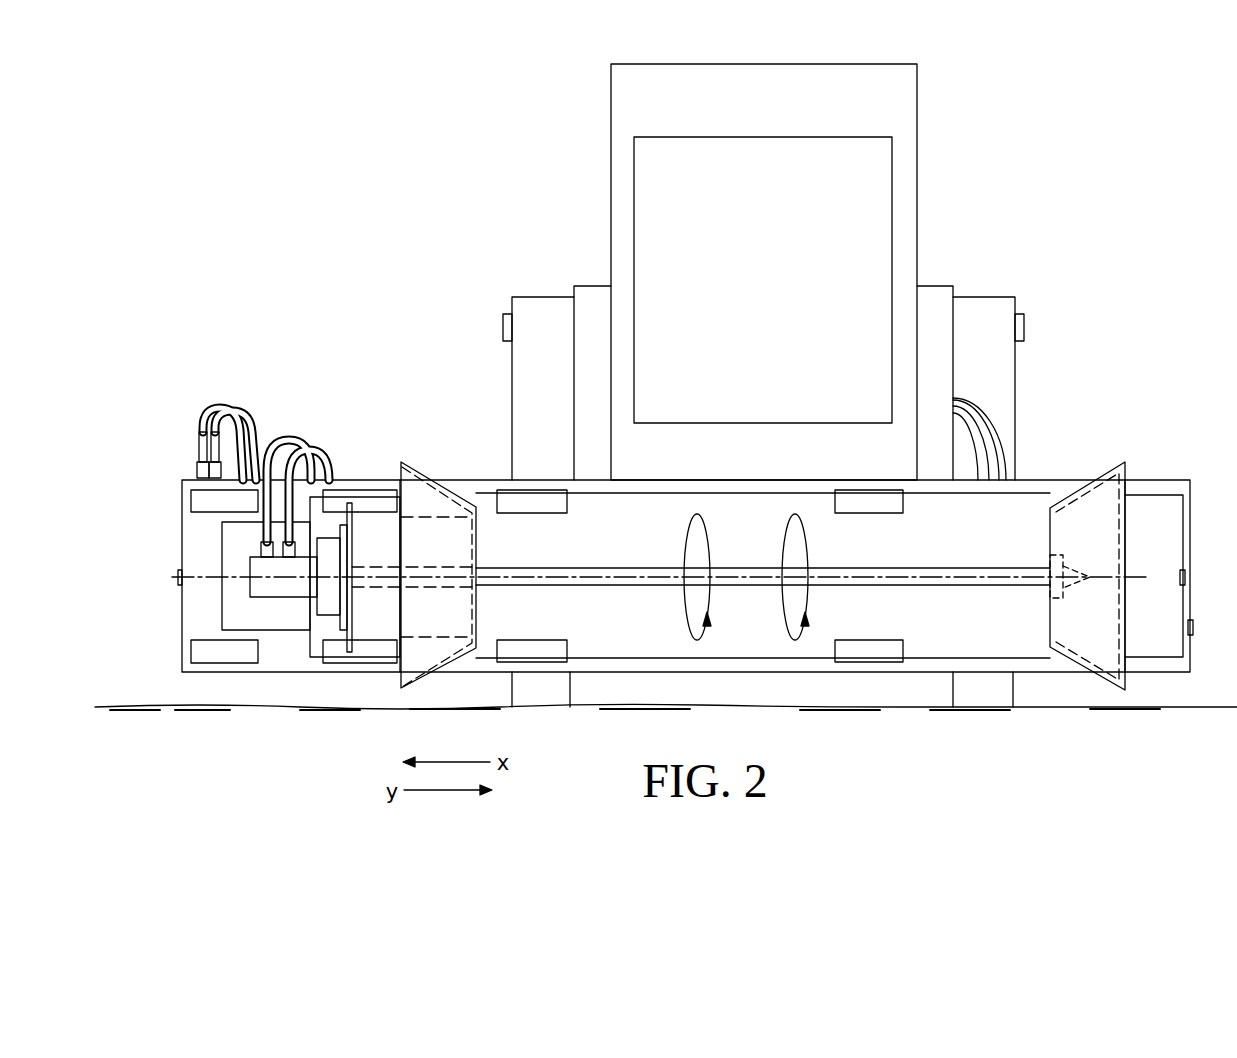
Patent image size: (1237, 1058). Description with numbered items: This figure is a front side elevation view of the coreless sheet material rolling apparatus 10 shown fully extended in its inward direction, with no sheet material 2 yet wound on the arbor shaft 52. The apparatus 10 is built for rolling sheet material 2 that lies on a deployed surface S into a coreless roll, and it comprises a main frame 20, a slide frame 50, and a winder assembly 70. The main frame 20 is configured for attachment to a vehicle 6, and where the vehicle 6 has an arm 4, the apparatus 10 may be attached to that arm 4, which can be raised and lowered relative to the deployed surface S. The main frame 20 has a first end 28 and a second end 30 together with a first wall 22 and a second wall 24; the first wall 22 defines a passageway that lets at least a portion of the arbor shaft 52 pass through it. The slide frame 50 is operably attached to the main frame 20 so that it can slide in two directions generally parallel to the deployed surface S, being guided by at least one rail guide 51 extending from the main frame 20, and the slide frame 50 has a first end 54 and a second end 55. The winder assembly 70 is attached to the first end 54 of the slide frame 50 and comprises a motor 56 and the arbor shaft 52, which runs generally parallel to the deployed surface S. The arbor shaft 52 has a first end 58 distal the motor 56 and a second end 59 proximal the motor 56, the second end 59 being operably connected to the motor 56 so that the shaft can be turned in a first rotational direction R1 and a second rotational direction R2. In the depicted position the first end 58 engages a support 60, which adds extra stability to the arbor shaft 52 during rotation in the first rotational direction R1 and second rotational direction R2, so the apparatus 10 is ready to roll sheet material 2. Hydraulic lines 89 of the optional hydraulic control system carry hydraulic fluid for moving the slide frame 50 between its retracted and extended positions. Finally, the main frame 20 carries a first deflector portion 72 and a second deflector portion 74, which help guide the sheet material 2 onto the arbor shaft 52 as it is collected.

The sheet material 2 is at (1236, 707).
The arm 4 is at (999, 362).
The vehicle 6 is at (938, 53).
The coreless sheet material rolling apparatus 10 is at (375, 432).
The main frame 20 is at (1157, 482).
The first wall 22 is at (458, 610).
The second wall 24 is at (1062, 620).
The first end 28 is at (176, 589).
The second end 30 is at (1192, 630).
The slide frame 50 is at (1176, 547).
The rail guide 51 is at (550, 503).
The arbor shaft 52 is at (660, 578).
The first end 54 is at (304, 647).
The second end 55 is at (1186, 577).
The motor 56 is at (327, 607).
The first end 58 is at (1090, 576).
The second end 59 is at (358, 565).
The support 60 is at (1067, 597).
The winder assembly 70 is at (238, 617).
The first deflector portion 72 is at (422, 475).
The second deflector portion 74 is at (1100, 478).
The hydraulic lines 89 is at (236, 410).
The first rotational direction R1 is at (686, 546).
The second rotational direction R2 is at (784, 546).
The deployed surface S is at (1050, 710).